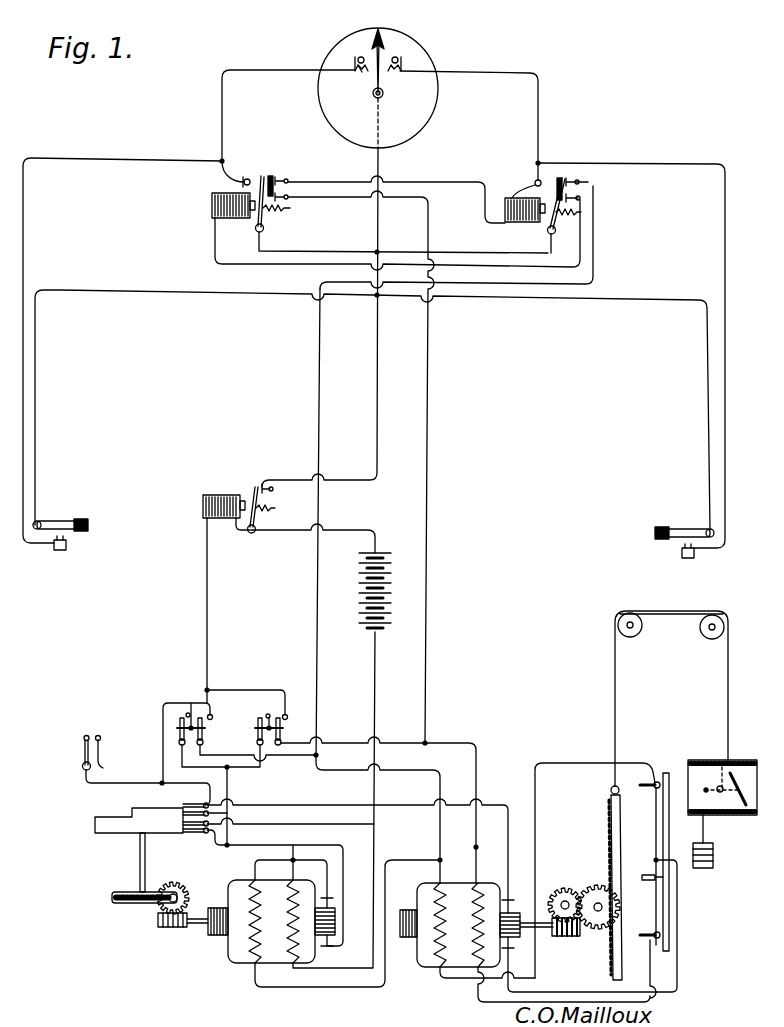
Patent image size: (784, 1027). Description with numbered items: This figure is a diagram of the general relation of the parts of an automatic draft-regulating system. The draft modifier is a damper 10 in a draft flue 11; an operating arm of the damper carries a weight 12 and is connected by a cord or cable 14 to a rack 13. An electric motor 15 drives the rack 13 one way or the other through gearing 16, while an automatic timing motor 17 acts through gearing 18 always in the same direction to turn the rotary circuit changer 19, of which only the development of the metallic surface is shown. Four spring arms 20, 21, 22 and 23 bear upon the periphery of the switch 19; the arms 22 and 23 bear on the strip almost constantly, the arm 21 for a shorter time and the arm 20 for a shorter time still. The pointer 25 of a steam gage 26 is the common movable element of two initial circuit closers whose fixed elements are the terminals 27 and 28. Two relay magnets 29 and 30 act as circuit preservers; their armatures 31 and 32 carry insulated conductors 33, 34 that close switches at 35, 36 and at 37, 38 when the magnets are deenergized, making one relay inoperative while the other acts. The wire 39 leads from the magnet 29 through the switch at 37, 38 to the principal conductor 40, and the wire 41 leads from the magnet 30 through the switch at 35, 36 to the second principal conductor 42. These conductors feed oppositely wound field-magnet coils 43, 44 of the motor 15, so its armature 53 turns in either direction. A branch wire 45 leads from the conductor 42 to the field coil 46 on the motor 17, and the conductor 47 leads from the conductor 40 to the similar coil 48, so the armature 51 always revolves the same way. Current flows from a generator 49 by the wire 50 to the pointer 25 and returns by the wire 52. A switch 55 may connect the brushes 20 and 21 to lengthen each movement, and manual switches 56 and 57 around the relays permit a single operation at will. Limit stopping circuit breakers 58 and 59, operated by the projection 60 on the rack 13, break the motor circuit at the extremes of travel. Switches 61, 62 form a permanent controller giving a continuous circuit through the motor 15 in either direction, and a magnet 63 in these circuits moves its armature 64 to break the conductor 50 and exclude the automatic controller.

The damper 10 is at (720, 773).
The draft flue 11 is at (730, 817).
The weight 12 is at (703, 870).
The rack 13 is at (619, 838).
The cord or cable 14 is at (620, 688).
The electric motor 15 is at (460, 955).
The gearing 16 is at (586, 888).
The automatic timing motor 17 is at (240, 957).
The gearing 18 is at (135, 904).
The rotary circuit changer 19 is at (103, 832).
The spring arm 20 is at (185, 805).
The spring arm 21 is at (183, 814).
The spring arm 22 is at (197, 834).
The spring arm 23 is at (193, 834).
The pointer 25 is at (383, 38).
The steam gage 26 is at (414, 104).
The fixed element 27 is at (353, 56).
The fixed element 28 is at (402, 58).
The relay magnet 29 is at (212, 208).
The relay magnet 30 is at (523, 226).
The armature 31 is at (263, 176).
The armature 32 is at (557, 178).
The insulated conductor 33 is at (275, 177).
The insulated conductor 34 is at (566, 178).
The switch contact 35 is at (288, 180).
The switch contact 36 is at (287, 200).
The switch contact 37 is at (580, 182).
The switch contact 38 is at (581, 203).
The wire 39 is at (270, 264).
The principal conductor 40 is at (317, 382).
The wire 41 is at (455, 181).
The principal conductor 42 is at (428, 395).
The field-magnet coil 43 is at (443, 893).
The field-magnet coil 44 is at (482, 893).
The branch wire 45 is at (386, 850).
The field magnet coil 46 is at (287, 940).
The conductor 47 is at (363, 990).
The field magnet coil 48 is at (246, 937).
The generator 49 is at (388, 593).
The wire 50 is at (377, 396).
The armature 51 is at (336, 925).
The return wire 52 is at (378, 672).
The armature 53 is at (514, 911).
The switch 55 is at (82, 756).
The switch 56 is at (66, 523).
The switch 57 is at (687, 530).
The limit stopping circuit breaker 58 is at (645, 782).
The limit stopping circuit breaker 59 is at (647, 938).
The projection 60 is at (637, 877).
The switch 61 is at (180, 729).
The switch 62 is at (286, 718).
The magnet 63 is at (217, 494).
The armature 64 is at (256, 518).